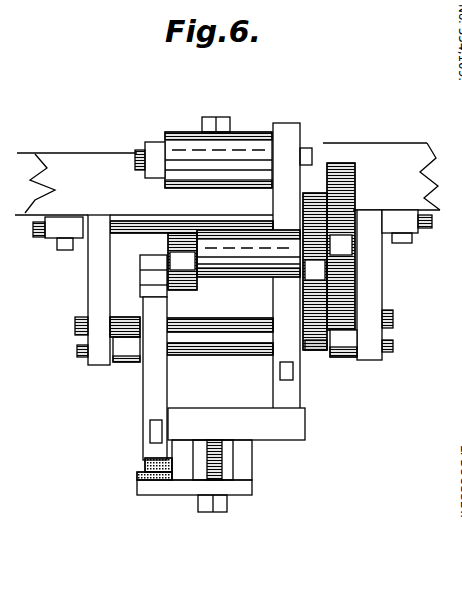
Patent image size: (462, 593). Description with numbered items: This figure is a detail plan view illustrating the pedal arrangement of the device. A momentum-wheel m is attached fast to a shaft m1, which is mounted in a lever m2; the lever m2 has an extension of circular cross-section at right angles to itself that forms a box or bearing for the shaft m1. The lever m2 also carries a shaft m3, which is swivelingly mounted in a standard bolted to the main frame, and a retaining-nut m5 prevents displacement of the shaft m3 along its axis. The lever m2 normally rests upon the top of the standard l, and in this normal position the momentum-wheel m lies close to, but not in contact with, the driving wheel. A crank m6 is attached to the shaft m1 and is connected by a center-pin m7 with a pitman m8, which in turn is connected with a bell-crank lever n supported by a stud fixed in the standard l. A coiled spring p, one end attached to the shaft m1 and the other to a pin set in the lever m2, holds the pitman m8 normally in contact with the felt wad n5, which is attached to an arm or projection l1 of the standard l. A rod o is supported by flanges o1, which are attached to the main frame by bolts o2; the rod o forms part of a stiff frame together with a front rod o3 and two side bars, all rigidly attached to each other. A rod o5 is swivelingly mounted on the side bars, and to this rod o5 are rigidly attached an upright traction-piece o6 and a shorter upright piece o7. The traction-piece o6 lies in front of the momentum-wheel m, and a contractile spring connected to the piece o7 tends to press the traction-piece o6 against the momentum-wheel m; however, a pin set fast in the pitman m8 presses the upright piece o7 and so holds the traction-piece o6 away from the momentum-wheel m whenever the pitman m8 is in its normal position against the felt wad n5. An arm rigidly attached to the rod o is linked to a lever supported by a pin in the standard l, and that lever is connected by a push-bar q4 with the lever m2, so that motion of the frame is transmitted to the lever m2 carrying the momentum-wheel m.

The shaft m3 is at (137, 152).
The retaining-nut m5 is at (152, 150).
The coiled spring p is at (313, 192).
The momentum-wheel m is at (355, 164).
The rod o is at (33, 230).
The flanges o1 is at (231, 224).
The bolts o2 is at (58, 250).
The front rod o3 is at (75, 325).
The rod o5 is at (78, 352).
The traction-piece o6 is at (348, 358).
The upright piece o7 is at (125, 378).
The shaft m1 is at (205, 279).
The lever m2 is at (286, 276).
The crank m6 is at (187, 290).
The center-pin m7 is at (140, 278).
The pitman m8 is at (160, 386).
The bell-crank lever n is at (150, 431).
The felt wad n5 is at (137, 476).
The standard l is at (236, 444).
The arm or projection l1 is at (160, 488).
The push-bar q4 is at (293, 372).